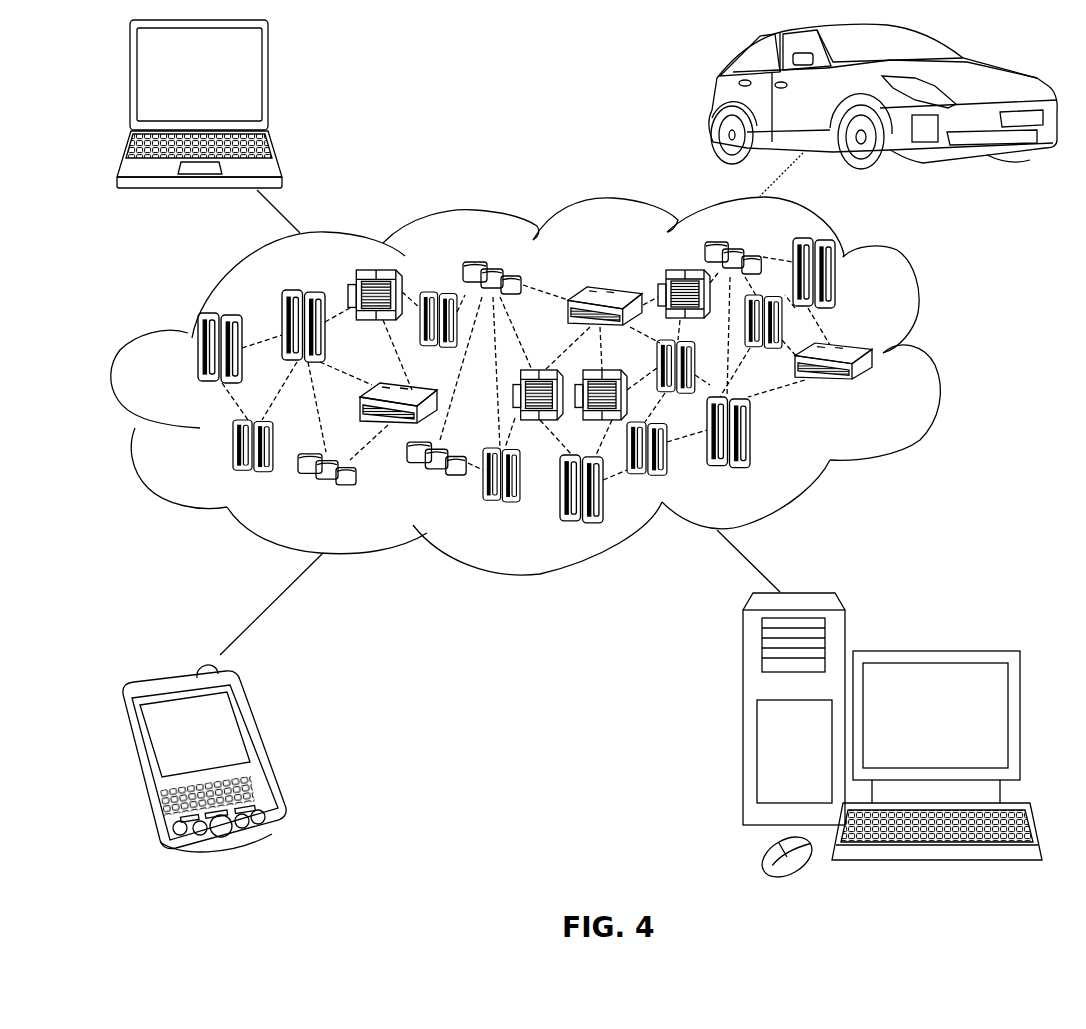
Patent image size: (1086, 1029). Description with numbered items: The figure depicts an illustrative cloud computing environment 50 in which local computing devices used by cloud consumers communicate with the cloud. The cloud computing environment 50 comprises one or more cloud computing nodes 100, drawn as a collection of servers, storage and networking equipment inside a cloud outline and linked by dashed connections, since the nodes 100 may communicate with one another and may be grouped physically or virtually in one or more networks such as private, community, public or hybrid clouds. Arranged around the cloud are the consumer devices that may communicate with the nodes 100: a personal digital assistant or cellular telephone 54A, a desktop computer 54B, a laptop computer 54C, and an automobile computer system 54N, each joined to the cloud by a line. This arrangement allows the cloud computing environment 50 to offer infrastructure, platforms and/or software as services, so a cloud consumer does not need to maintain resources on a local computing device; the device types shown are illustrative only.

The cloud computing environment 50 is at (935, 360).
The cloud computing nodes 100 is at (878, 391).
The personal digital assistant or cellular telephone 54A is at (260, 747).
The desktop computer 54B is at (933, 650).
The laptop computer 54C is at (268, 83).
The automobile computer system 54N is at (710, 97).